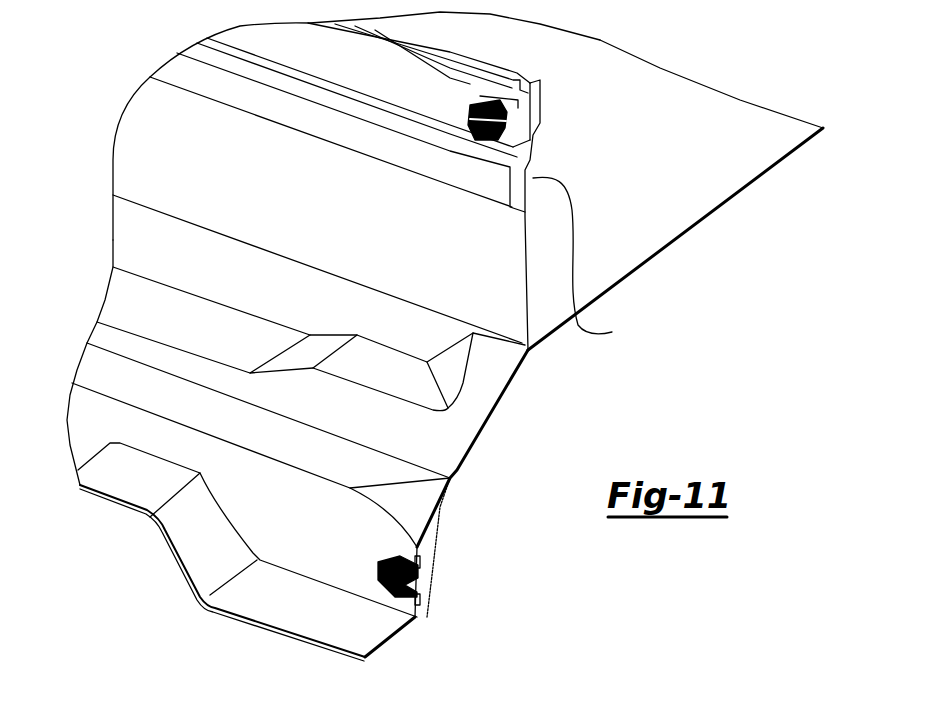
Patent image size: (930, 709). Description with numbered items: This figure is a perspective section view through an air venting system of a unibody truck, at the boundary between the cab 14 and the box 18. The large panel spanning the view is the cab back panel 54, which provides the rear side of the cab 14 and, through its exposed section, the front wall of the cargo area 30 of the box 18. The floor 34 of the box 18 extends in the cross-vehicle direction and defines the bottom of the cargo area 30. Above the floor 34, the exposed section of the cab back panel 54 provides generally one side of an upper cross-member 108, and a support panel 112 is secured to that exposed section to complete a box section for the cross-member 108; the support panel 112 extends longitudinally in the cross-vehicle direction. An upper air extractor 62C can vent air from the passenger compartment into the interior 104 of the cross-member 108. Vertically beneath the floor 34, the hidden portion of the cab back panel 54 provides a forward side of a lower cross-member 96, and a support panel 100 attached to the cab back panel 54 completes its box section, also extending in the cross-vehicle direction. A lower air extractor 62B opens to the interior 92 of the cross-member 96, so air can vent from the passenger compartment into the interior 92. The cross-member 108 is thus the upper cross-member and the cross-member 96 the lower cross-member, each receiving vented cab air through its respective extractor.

The cab 14 is at (236, 423).
The box 18 is at (635, 208).
The cargo area 30 is at (694, 107).
The floor 34 is at (680, 164).
The cab back panel 54 is at (175, 128).
The air extractor 62B is at (378, 566).
The upper air extractor 62C is at (472, 110).
The interior 92 is at (424, 598).
The cross-member 96 is at (433, 587).
The support panel 100 is at (440, 530).
The interior 104 is at (543, 106).
The cross-member 108 is at (540, 80).
The support panel 112 is at (593, 259).